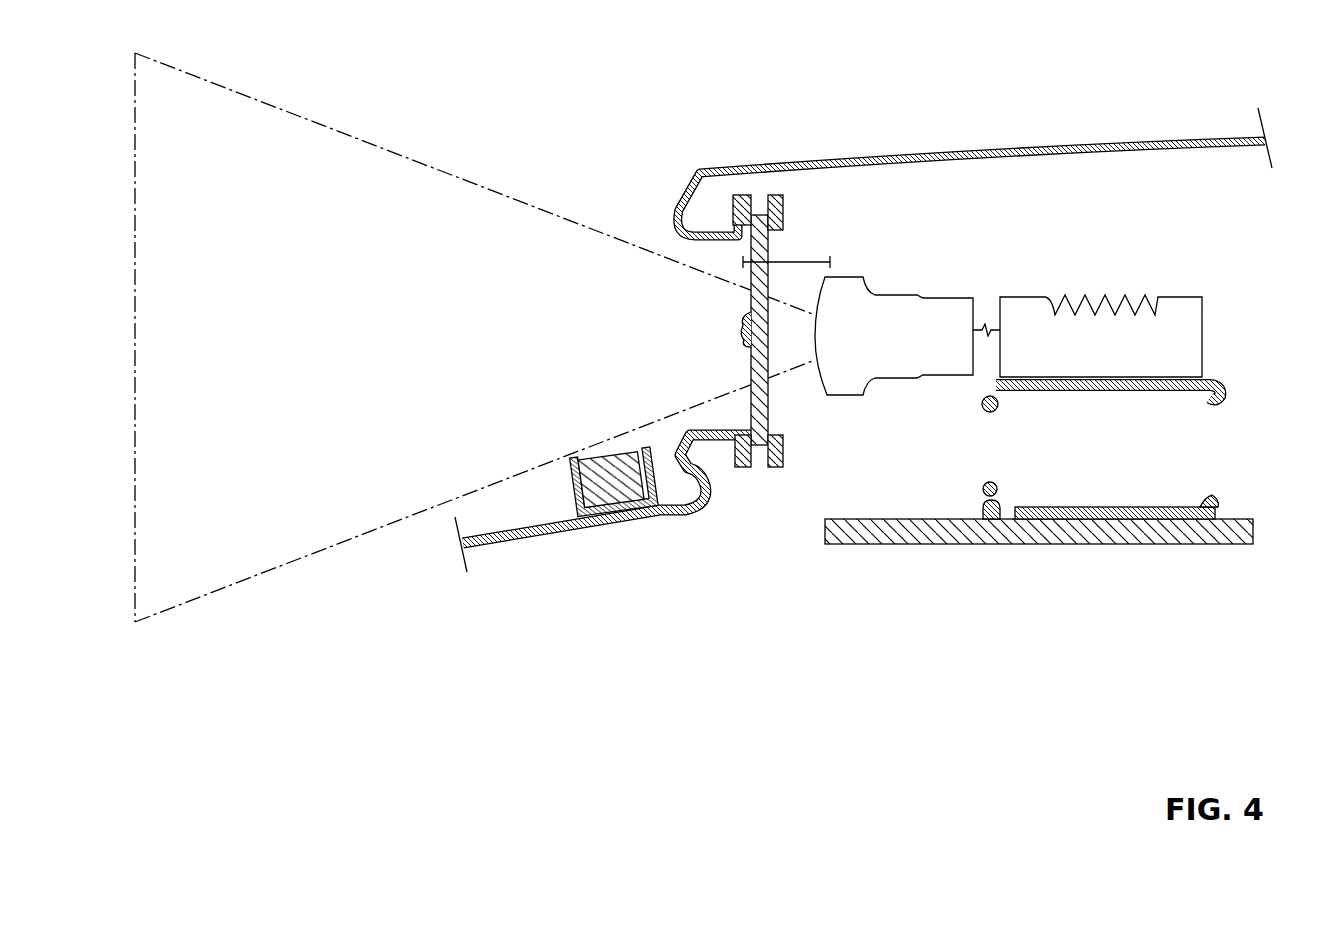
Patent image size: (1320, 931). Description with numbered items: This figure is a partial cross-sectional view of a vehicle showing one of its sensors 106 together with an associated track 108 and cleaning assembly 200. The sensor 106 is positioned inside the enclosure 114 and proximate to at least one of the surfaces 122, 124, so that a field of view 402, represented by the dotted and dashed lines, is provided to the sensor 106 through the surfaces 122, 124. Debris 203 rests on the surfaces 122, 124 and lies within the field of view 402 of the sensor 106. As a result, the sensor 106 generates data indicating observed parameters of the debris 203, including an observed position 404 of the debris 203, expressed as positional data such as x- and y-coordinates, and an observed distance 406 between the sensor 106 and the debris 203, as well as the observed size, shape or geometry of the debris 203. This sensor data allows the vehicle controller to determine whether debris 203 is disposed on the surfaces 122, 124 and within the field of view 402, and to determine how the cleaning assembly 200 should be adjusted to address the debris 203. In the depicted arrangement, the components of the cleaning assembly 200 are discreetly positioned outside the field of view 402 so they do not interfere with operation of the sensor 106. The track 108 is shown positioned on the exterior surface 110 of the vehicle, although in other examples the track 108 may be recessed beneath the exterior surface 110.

The sensor 106 is at (1132, 234).
The track 108 is at (572, 468).
The exterior surface 110 is at (500, 528).
The enclosure 114 is at (893, 150).
The surface 122 is at (802, 348).
The surface 124 is at (775, 402).
The cleaning assembly 200 is at (575, 441).
The debris 203 is at (742, 337).
The field of view 402 is at (420, 163).
The observed position 404 is at (678, 293).
The observed distance 406 is at (789, 262).